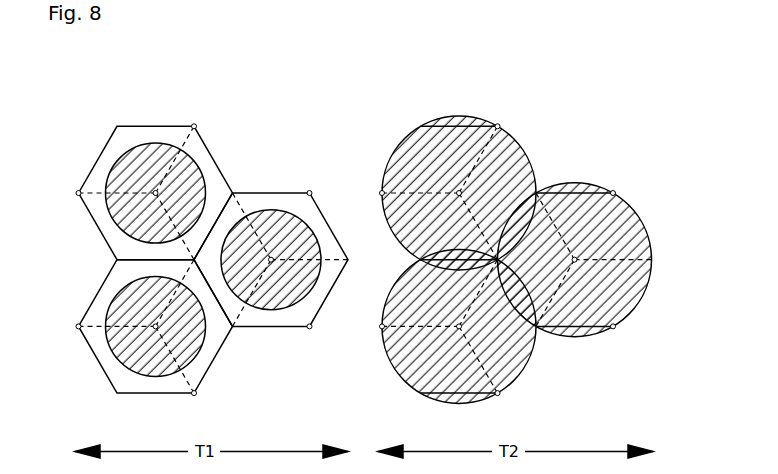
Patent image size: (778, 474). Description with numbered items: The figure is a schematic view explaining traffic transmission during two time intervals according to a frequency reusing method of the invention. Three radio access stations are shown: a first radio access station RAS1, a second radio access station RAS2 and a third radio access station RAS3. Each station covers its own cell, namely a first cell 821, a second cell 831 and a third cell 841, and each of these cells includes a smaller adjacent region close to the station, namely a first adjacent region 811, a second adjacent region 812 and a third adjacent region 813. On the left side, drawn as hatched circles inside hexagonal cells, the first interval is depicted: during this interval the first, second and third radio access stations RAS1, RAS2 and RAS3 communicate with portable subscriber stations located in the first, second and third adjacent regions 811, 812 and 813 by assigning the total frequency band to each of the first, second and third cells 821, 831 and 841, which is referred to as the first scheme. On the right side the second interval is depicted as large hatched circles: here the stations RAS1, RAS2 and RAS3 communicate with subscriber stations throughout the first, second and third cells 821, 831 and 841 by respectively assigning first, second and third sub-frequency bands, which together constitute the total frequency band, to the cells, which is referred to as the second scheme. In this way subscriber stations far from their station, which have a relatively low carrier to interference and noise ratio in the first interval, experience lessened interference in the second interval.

The first adjacent region 811 is at (193, 356).
The second adjacent region 812 is at (270, 210).
The third adjacent region 813 is at (149, 144).
The first cell 821 is at (530, 365).
The second cell 831 is at (573, 183).
The third cell 841 is at (460, 116).
The first radio access station RAS1 is at (155, 327).
The second radio access station RAS2 is at (272, 262).
The third radio access station RAS3 is at (155, 193).